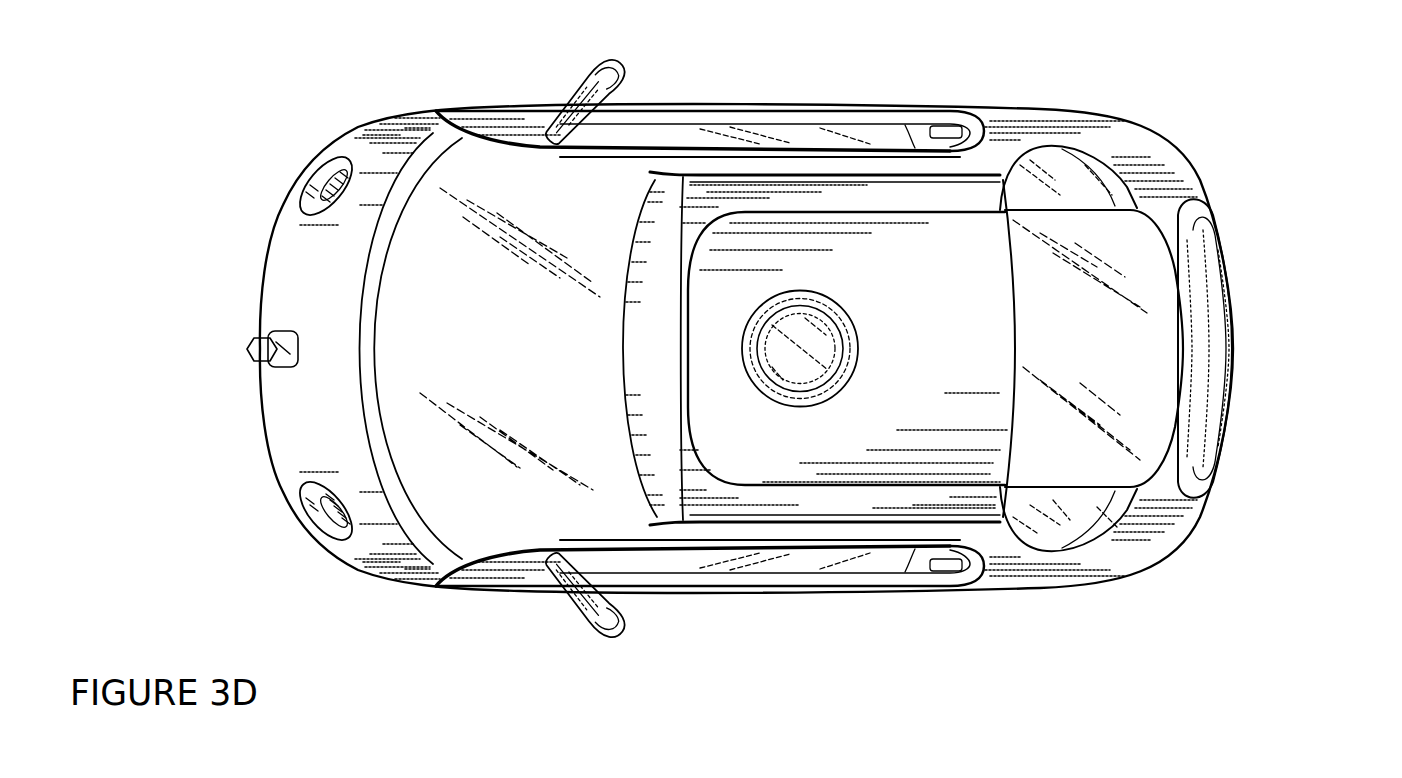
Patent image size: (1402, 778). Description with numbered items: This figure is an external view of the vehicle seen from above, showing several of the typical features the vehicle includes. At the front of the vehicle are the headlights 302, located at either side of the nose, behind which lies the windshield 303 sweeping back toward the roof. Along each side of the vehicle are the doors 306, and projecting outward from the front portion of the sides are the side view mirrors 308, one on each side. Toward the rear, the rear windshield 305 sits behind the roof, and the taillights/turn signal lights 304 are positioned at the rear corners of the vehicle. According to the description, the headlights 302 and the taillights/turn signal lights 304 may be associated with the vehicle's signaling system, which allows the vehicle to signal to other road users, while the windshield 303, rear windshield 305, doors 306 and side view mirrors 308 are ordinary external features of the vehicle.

The headlights 302 is at (303, 172).
The windshield 303 is at (427, 230).
The taillights/turn signal lights 304 is at (1090, 190).
The rear windshield 305 is at (1163, 300).
The doors 306 is at (887, 112).
The side view mirrors 308 is at (610, 79).